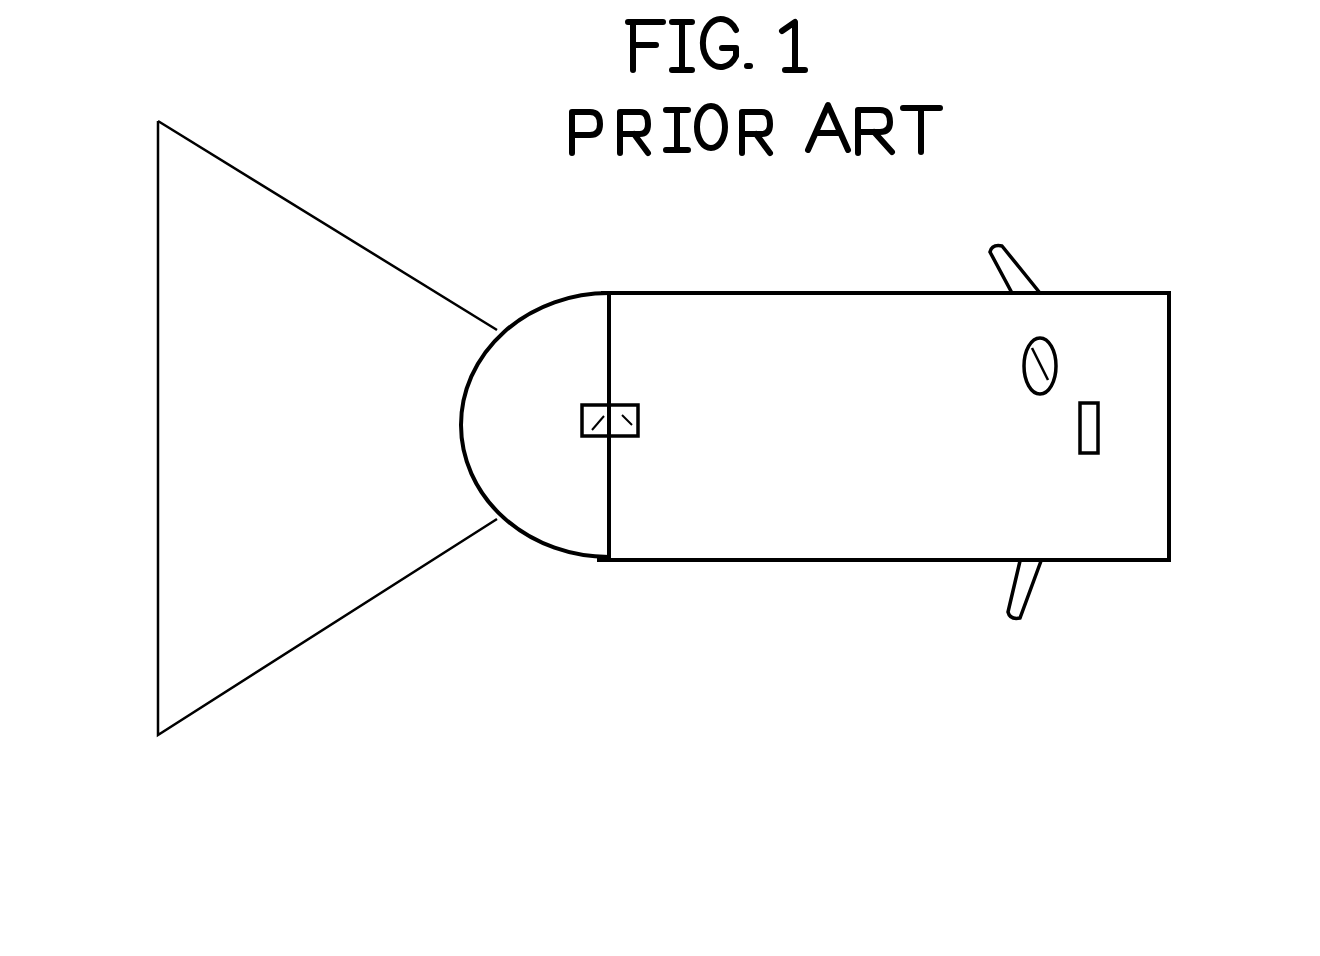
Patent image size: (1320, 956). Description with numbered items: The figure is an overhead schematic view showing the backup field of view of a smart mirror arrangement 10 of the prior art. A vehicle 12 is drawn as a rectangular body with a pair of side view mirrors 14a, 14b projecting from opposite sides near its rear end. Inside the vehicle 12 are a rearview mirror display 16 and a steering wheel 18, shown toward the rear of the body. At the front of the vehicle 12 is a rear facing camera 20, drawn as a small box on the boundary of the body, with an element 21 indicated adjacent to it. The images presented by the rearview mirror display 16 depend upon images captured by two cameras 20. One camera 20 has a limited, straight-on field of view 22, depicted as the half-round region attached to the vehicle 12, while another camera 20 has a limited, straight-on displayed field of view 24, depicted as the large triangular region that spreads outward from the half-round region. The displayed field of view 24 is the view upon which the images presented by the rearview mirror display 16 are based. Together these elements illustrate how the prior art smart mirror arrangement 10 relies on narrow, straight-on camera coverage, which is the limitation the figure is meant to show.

The smart mirror arrangement 10 is at (1076, 164).
The vehicle 12 is at (895, 521).
The side view mirror 14a is at (1036, 272).
The side view mirror 14b is at (1037, 592).
The rearview mirror display 16 is at (1098, 430).
The steering wheel 18 is at (1057, 360).
The rear facing camera 20 is at (634, 422).
The light emitting element 21 is at (597, 430).
The field of view 22 is at (556, 292).
The displayed field of view 24 is at (375, 598).